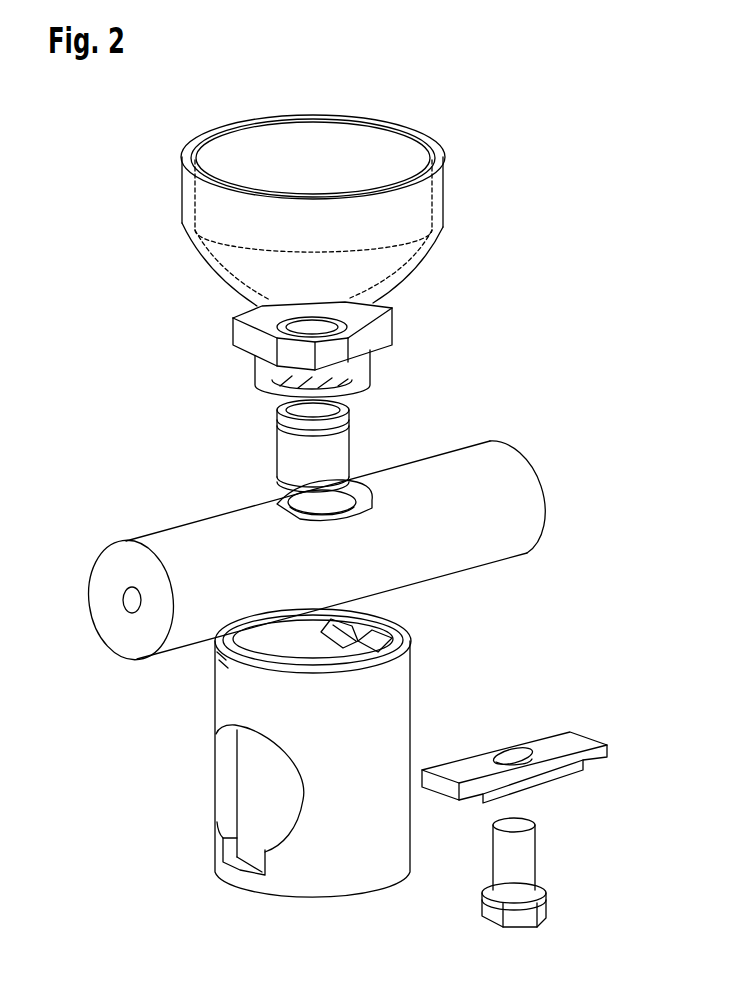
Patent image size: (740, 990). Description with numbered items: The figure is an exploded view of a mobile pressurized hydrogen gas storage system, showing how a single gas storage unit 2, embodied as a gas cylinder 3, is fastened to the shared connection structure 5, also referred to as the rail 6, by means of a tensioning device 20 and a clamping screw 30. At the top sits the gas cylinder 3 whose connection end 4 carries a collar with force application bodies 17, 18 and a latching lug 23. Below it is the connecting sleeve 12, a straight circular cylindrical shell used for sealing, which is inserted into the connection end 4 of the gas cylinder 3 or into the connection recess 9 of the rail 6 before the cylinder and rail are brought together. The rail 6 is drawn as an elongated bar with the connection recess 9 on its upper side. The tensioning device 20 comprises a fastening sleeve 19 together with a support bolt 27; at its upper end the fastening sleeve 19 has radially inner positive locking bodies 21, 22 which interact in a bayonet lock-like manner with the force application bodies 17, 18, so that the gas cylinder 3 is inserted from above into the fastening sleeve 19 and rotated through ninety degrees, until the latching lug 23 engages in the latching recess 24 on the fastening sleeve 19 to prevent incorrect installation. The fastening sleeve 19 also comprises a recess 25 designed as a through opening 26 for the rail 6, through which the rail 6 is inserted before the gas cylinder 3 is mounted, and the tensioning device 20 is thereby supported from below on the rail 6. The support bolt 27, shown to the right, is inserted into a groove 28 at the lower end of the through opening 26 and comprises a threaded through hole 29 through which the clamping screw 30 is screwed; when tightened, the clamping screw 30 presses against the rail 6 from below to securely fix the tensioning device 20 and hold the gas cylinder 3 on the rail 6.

The gas storage unit 2 is at (455, 157).
The gas cylinder 3 is at (420, 188).
The connection end 4 is at (364, 360).
The shared connection structure 5 is at (525, 492).
The rail 6 is at (495, 470).
The connection recess 9 is at (293, 498).
The connecting sleeve 12 is at (270, 437).
The force application body 17 is at (238, 333).
The force application body 18 is at (390, 307).
The fastening sleeve 19 is at (387, 700).
The tensioning device 20 is at (197, 897).
The positive locking body 21 is at (215, 673).
The positive locking body 22 is at (363, 610).
The latching lug 23 is at (258, 308).
The latching recess 24 is at (370, 637).
The recess 25 is at (215, 795).
The through opening 26 is at (227, 752).
The support bolt 27 is at (570, 770).
The groove 28 is at (233, 870).
The threaded through hole 29 is at (537, 750).
The clamping screw 30 is at (523, 868).